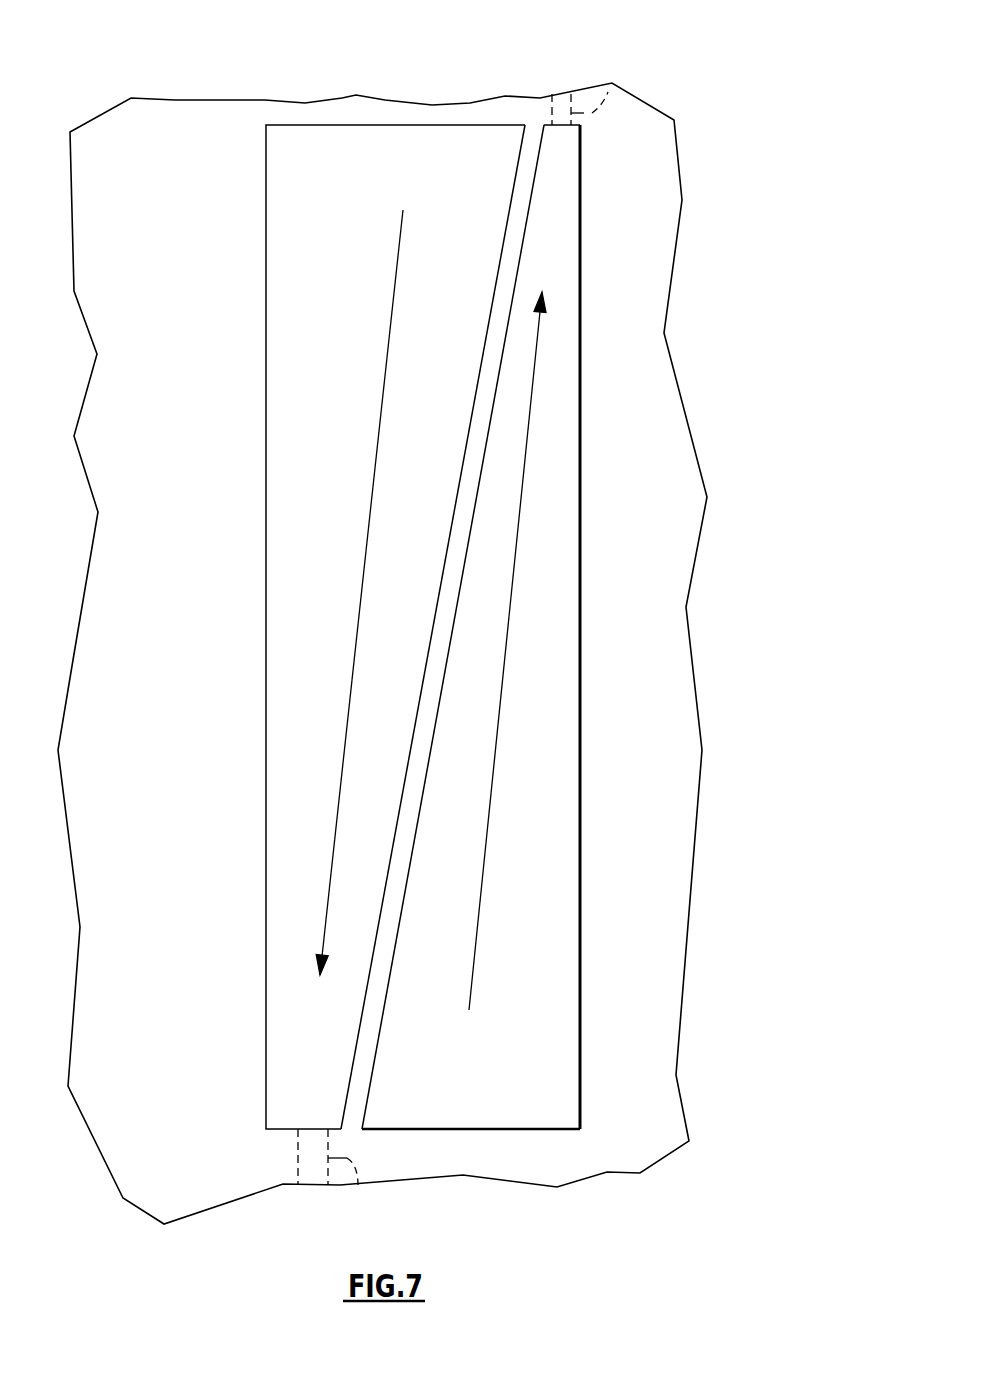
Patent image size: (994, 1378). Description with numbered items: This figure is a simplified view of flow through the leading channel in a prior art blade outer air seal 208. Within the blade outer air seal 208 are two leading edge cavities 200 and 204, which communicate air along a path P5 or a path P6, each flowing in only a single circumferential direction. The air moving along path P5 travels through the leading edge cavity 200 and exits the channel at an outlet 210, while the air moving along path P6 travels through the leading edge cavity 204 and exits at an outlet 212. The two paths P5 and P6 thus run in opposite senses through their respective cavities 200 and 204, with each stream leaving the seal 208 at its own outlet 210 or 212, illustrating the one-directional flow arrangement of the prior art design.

The leading edge cavity 200 is at (331, 191).
The leading edge cavity 204 is at (540, 263).
The prior art blade outer air seal 208 is at (449, 617).
The outlet 210 is at (357, 1190).
The outlet 212 is at (612, 83).
The path P5 is at (363, 557).
The path P6 is at (507, 645).